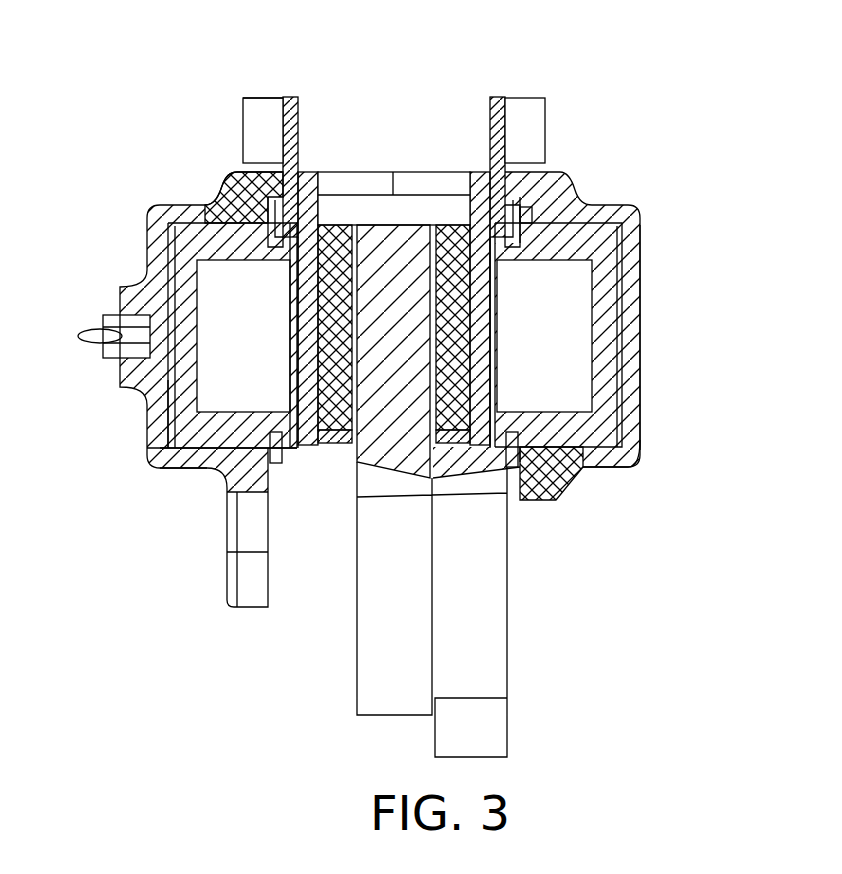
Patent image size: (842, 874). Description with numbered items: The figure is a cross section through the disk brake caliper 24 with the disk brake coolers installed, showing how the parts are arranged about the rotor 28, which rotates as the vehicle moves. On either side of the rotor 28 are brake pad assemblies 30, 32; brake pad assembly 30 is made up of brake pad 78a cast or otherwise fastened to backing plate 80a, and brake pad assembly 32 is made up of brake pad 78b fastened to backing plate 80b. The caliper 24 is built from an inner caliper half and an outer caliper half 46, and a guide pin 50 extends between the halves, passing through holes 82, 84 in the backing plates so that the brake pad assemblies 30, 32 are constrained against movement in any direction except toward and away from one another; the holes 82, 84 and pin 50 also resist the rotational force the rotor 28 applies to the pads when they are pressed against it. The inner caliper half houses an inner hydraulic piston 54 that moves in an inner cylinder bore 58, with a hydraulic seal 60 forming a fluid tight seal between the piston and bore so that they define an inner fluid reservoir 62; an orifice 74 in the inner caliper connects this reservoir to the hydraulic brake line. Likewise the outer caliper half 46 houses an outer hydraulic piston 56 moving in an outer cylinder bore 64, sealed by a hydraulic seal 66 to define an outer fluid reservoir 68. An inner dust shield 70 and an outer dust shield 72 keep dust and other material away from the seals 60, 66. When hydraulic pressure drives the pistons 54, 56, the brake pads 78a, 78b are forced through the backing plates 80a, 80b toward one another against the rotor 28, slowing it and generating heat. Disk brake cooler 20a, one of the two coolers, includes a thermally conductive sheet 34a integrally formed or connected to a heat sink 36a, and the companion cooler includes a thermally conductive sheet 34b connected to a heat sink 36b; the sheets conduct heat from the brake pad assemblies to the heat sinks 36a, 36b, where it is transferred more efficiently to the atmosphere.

The disk brake cooler 20a is at (263, 96).
The disk brake caliper 24 is at (646, 333).
The rotor 28 is at (472, 565).
The brake pad assembly 30 is at (305, 455).
The brake pad assembly 32 is at (483, 455).
The thermally conductive sheet 34a is at (297, 150).
The thermally conductive sheet 34b is at (492, 148).
The heat sink 36a is at (262, 120).
The heat sink 36b is at (531, 132).
The outer caliper half 46 is at (542, 478).
The guide pin 50 is at (428, 212).
The inner hydraulic piston 54 is at (248, 453).
The outer hydraulic piston 56 is at (577, 425).
The inner cylinder bore 58 is at (173, 397).
The hydraulic seal 60 is at (243, 215).
The inner fluid reservoir 62 is at (195, 428).
The outer cylinder bore 64 is at (621, 394).
The hydraulic seal 66 is at (538, 217).
The outer fluid reservoir 68 is at (614, 391).
The inner dust shield 70 is at (277, 217).
The outer dust shield 72 is at (514, 214).
The orifice 74 is at (110, 328).
The brake pad 78a is at (334, 297).
The brake pad 78b is at (459, 305).
The backing plate 80a is at (185, 320).
The backing plate 80b is at (482, 287).
The hole 82 is at (313, 174).
The hole 84 is at (474, 176).